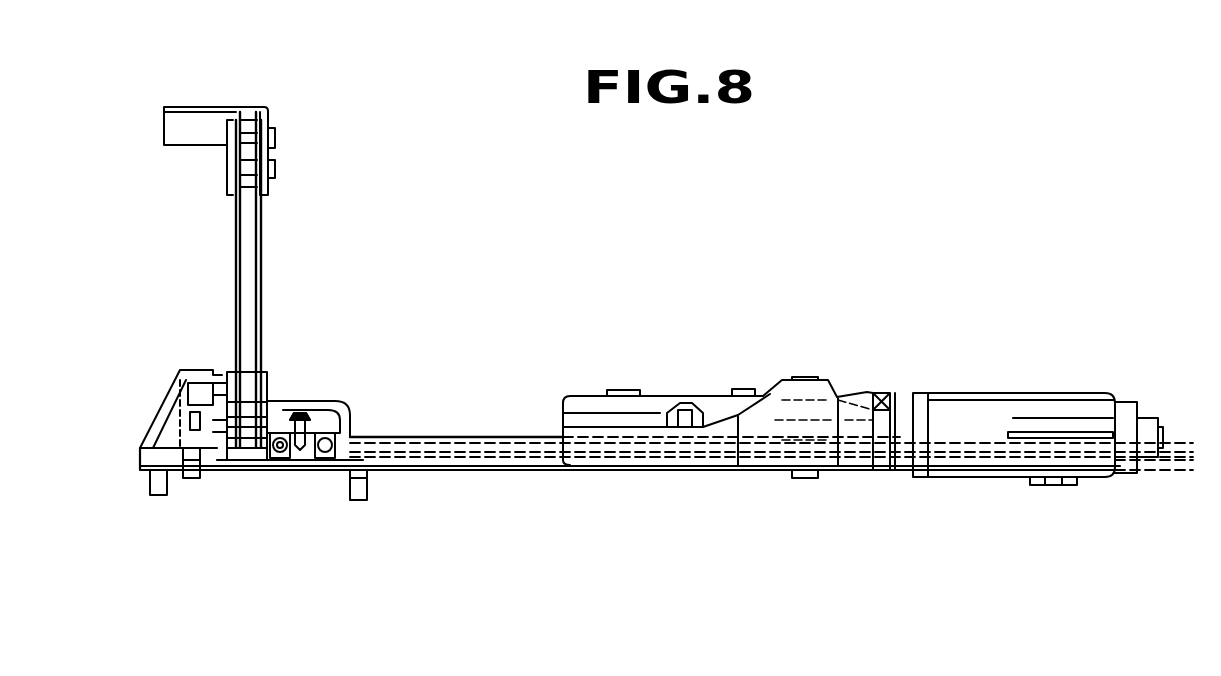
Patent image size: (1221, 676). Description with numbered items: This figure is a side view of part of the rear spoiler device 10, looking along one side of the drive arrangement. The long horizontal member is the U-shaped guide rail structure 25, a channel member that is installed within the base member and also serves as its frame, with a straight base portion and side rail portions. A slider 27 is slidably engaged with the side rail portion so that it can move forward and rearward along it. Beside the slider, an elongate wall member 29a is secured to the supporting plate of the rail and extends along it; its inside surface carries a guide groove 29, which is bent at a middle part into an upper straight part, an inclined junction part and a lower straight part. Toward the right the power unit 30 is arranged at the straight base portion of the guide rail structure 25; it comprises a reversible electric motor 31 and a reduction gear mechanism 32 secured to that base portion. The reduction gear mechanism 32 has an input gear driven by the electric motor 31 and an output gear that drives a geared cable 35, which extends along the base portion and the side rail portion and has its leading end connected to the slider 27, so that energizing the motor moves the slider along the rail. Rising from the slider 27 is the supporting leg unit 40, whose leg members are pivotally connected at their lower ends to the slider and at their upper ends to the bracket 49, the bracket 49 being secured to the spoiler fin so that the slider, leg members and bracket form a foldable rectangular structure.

The rear spoiler device 10 is at (635, 270).
The U-shaped guide rail structure 25 is at (477, 436).
The slider 27 is at (302, 460).
The guide groove 29 is at (222, 385).
The elongate wall member 29a is at (205, 380).
The power unit 30 is at (901, 390).
The reversible electric motor 31 is at (1008, 408).
The reduction gear mechanism 32 is at (715, 400).
The geared cable 35 is at (281, 455).
The supporting leg unit 40 is at (267, 288).
The bracket 49 is at (196, 143).